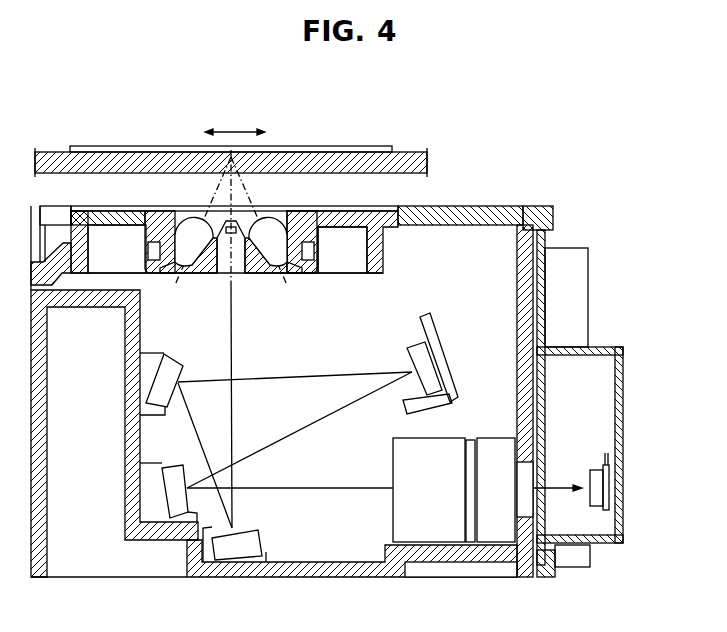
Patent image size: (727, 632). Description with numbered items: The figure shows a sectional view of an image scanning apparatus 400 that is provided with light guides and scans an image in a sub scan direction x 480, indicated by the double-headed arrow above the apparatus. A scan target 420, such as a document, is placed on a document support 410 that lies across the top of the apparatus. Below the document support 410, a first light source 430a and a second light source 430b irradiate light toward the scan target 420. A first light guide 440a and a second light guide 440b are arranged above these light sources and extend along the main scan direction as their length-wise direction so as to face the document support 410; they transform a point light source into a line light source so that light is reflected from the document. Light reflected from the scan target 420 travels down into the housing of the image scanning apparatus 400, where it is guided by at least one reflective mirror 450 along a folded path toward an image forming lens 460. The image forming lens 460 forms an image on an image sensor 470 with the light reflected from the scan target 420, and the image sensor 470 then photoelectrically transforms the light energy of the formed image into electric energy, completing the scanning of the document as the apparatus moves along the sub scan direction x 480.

The image scanning apparatus 400 is at (495, 101).
The document support 410 is at (143, 160).
The scan target 420 is at (97, 148).
The first light source 430a is at (193, 274).
The second light source 430b is at (270, 274).
The first light guide 440a is at (187, 223).
The second light guide 440b is at (272, 221).
The reflective mirror 450 is at (172, 363).
The image forming lens 460 is at (492, 450).
The image sensor 470 is at (602, 465).
The sub scan direction x 480 is at (243, 115).